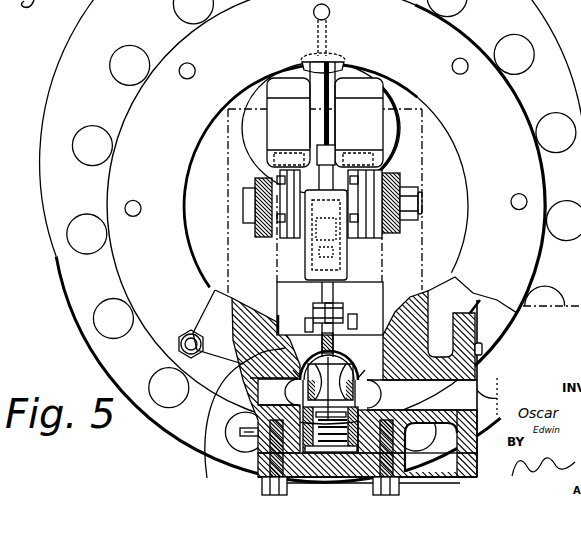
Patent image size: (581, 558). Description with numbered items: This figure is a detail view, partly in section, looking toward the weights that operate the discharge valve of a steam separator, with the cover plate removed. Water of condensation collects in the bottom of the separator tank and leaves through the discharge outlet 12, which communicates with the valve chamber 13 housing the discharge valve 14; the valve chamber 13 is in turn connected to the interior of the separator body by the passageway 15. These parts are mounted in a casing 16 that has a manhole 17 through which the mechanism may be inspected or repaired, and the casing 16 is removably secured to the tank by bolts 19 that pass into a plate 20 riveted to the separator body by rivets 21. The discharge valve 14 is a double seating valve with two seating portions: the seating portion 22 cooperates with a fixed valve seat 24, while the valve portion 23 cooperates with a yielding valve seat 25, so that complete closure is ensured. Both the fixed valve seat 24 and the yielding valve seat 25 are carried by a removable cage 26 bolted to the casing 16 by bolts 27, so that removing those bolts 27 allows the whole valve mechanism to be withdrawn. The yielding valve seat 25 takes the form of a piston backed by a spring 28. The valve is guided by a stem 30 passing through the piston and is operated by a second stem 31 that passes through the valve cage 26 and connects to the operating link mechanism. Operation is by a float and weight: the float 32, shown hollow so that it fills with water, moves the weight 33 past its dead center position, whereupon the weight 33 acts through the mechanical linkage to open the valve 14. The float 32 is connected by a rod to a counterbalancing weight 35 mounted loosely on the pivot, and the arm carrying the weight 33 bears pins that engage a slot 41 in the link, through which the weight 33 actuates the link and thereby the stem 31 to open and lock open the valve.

The discharge outlet 12 is at (467, 403).
The valve chamber 13 is at (212, 466).
The discharge valve 14 is at (257, 375).
The passageway 15 is at (247, 327).
The casing 16 is at (270, 394).
The manhole 17 is at (275, 265).
The bolts 19 is at (193, 344).
The plate 20 is at (97, 185).
The rivets 21 is at (95, 148).
The seating portion 22 is at (408, 330).
The valve portion 23 is at (463, 382).
The fixed valve seat 24 is at (417, 362).
The yielding valve seat 25 is at (360, 410).
The removable cage 26 is at (333, 462).
The bolts 27 is at (387, 462).
The spring 28 is at (386, 470).
The stem 30 is at (343, 350).
The stem 31 is at (350, 340).
The float 32 is at (399, 123).
The weight 33 is at (357, 84).
The counterbalancing weight 35 is at (341, 265).
The slot 41 is at (316, 36).